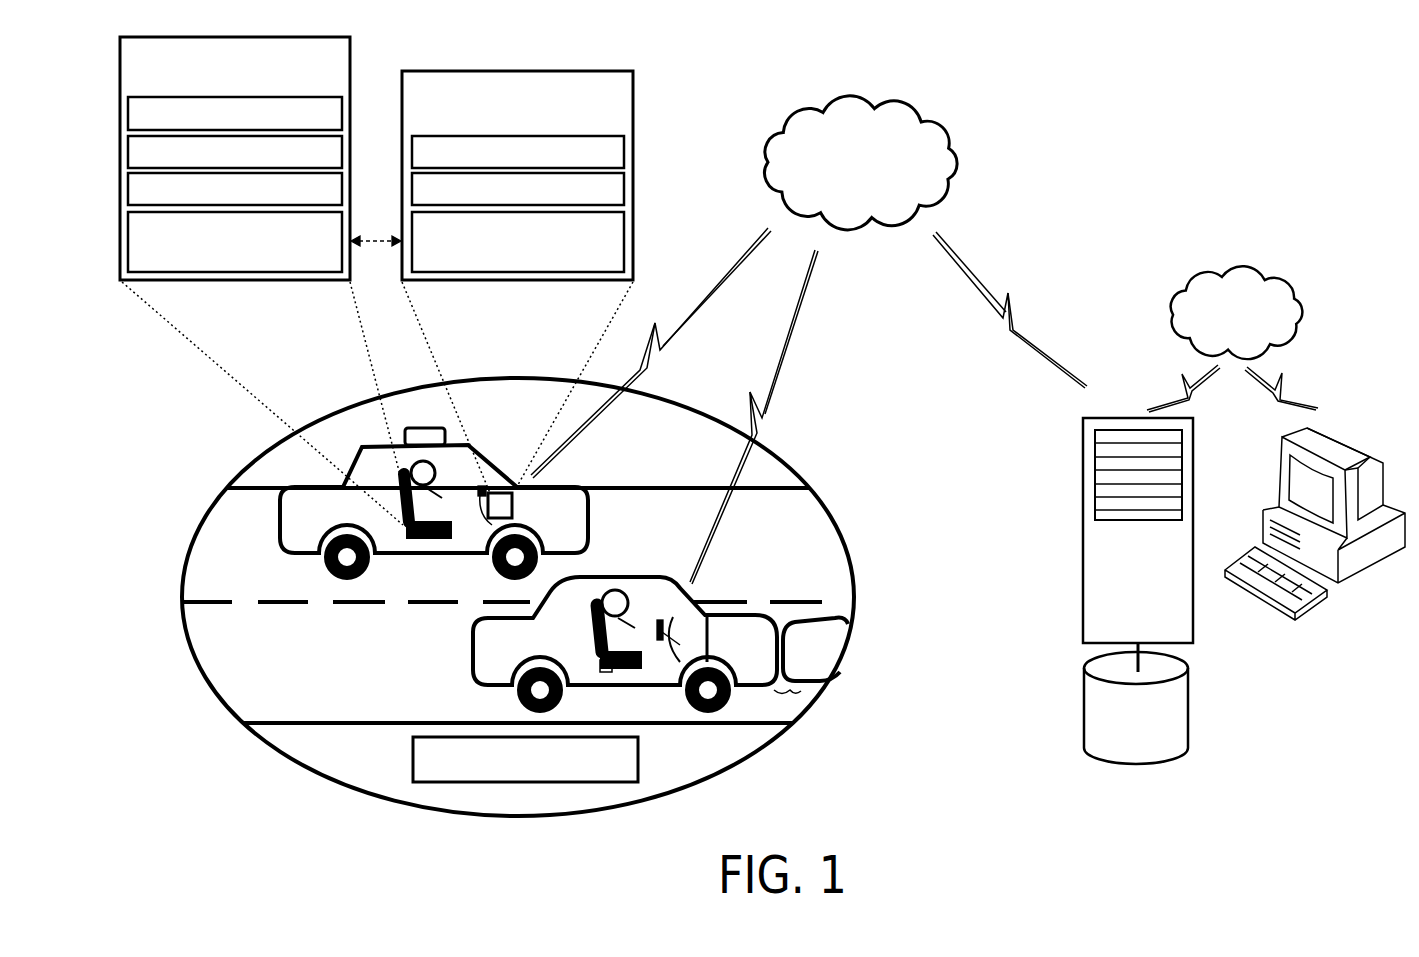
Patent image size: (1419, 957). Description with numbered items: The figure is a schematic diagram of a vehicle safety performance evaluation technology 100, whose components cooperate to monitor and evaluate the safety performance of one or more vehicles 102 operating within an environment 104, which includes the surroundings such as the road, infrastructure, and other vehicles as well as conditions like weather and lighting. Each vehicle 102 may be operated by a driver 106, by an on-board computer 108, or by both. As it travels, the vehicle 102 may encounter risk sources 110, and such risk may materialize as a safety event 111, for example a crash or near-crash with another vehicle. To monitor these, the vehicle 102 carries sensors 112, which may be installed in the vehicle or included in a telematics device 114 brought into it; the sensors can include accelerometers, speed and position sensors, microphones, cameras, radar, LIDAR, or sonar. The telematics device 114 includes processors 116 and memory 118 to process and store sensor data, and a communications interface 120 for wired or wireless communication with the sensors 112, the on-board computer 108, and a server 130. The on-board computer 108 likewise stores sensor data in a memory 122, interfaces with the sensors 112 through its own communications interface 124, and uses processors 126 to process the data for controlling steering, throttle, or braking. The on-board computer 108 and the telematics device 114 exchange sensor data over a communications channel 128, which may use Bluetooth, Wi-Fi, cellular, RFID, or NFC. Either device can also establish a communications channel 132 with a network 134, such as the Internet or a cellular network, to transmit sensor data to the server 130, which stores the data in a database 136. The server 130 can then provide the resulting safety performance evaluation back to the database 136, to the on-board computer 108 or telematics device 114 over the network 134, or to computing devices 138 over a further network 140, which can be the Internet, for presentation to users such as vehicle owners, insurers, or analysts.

The vehicle safety performance evaluation technology 100 is at (1232, 104).
The vehicle 102 is at (488, 686).
The environment 104 is at (252, 463).
The driver 106 is at (453, 523).
The on-board computer 108 is at (528, 507).
The risk sources 110 is at (525, 759).
The safety event 111 is at (789, 697).
The sensors 112 is at (420, 428).
The telematics device 114 is at (606, 698).
The processors 116 is at (235, 152).
The memory 118 is at (235, 189).
The communications interface 120 is at (235, 242).
The memory 122 is at (518, 189).
The communications interface 124 is at (518, 242).
The processors 126 is at (518, 152).
The communications channel 128 is at (379, 245).
The server 130 is at (1080, 445).
The communications channel 132 is at (667, 343).
The network 134 is at (844, 175).
The database 136 is at (1188, 692).
The computing device 138 is at (1256, 460).
The network 140 is at (1217, 328).